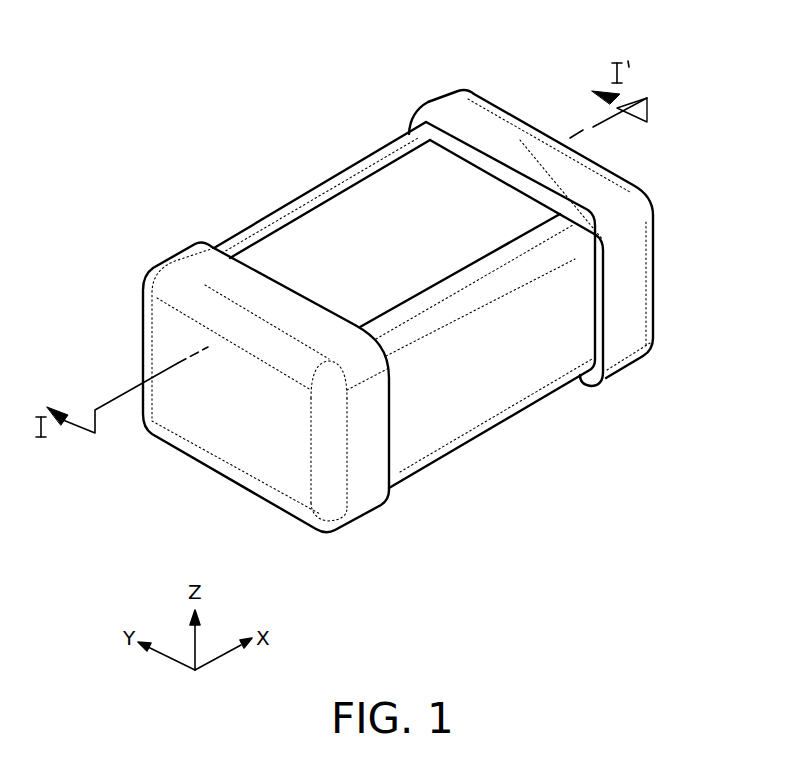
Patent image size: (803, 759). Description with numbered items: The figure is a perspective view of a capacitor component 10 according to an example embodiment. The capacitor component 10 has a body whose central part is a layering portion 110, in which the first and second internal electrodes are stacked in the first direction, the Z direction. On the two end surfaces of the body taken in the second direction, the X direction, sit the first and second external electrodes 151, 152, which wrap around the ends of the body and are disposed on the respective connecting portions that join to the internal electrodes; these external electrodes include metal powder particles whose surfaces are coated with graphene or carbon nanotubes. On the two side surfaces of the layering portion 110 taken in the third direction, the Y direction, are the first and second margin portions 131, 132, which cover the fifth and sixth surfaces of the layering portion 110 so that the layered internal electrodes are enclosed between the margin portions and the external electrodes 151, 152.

The capacitor component 10 is at (299, 30).
The layering portion 110 is at (470, 180).
The first margin portion 131 is at (537, 256).
The second margin portion 132 is at (307, 202).
The first external electrode 151 is at (175, 255).
The second external electrode 152 is at (432, 116).